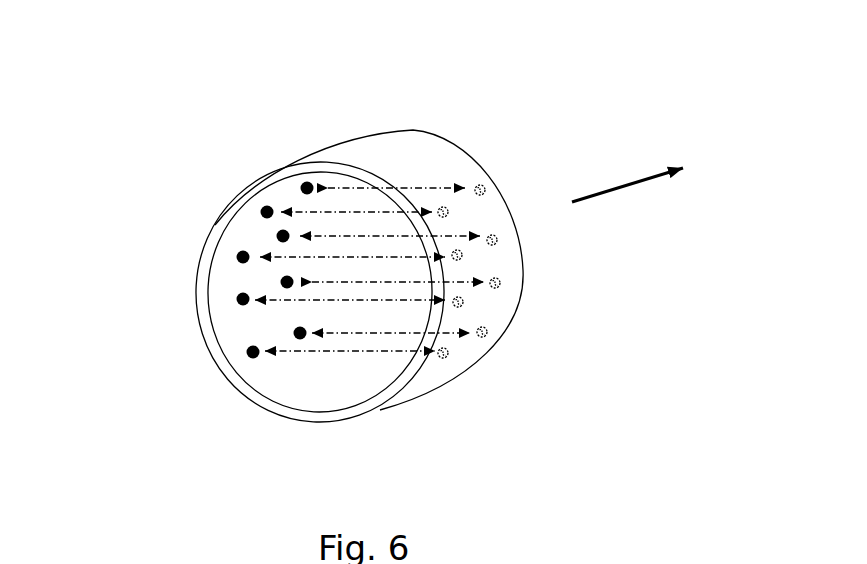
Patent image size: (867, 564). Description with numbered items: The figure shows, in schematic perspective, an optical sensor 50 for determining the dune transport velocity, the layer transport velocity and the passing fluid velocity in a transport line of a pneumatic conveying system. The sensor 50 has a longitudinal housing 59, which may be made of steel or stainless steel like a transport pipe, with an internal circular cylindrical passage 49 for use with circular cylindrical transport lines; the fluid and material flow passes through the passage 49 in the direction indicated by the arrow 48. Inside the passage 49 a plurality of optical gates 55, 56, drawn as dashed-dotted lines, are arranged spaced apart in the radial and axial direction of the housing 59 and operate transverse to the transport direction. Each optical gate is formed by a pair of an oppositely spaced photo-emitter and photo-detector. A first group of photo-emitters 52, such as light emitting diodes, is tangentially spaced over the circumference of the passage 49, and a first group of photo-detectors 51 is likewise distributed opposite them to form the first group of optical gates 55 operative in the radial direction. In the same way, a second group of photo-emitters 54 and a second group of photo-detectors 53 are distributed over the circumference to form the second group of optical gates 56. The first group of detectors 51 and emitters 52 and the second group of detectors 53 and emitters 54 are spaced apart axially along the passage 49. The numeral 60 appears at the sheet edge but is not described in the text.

The arrow indicating fluid and material flow 48 is at (617, 177).
The internal circular cylindrical passage 49 is at (310, 388).
The optical sensor 50 is at (385, 262).
The first group of photo-detectors 51 is at (443, 353).
The first group of photo-emitters 52 is at (300, 333).
The second group of photo-detectors 53 is at (443, 212).
The second group of photo-emitters 54 is at (267, 212).
The first group of optical gates 55 is at (340, 180).
The second group of optical gates 56 is at (278, 256).
The longitudinal housing 59 is at (427, 140).
The sheet number 60 is at (592, 559).